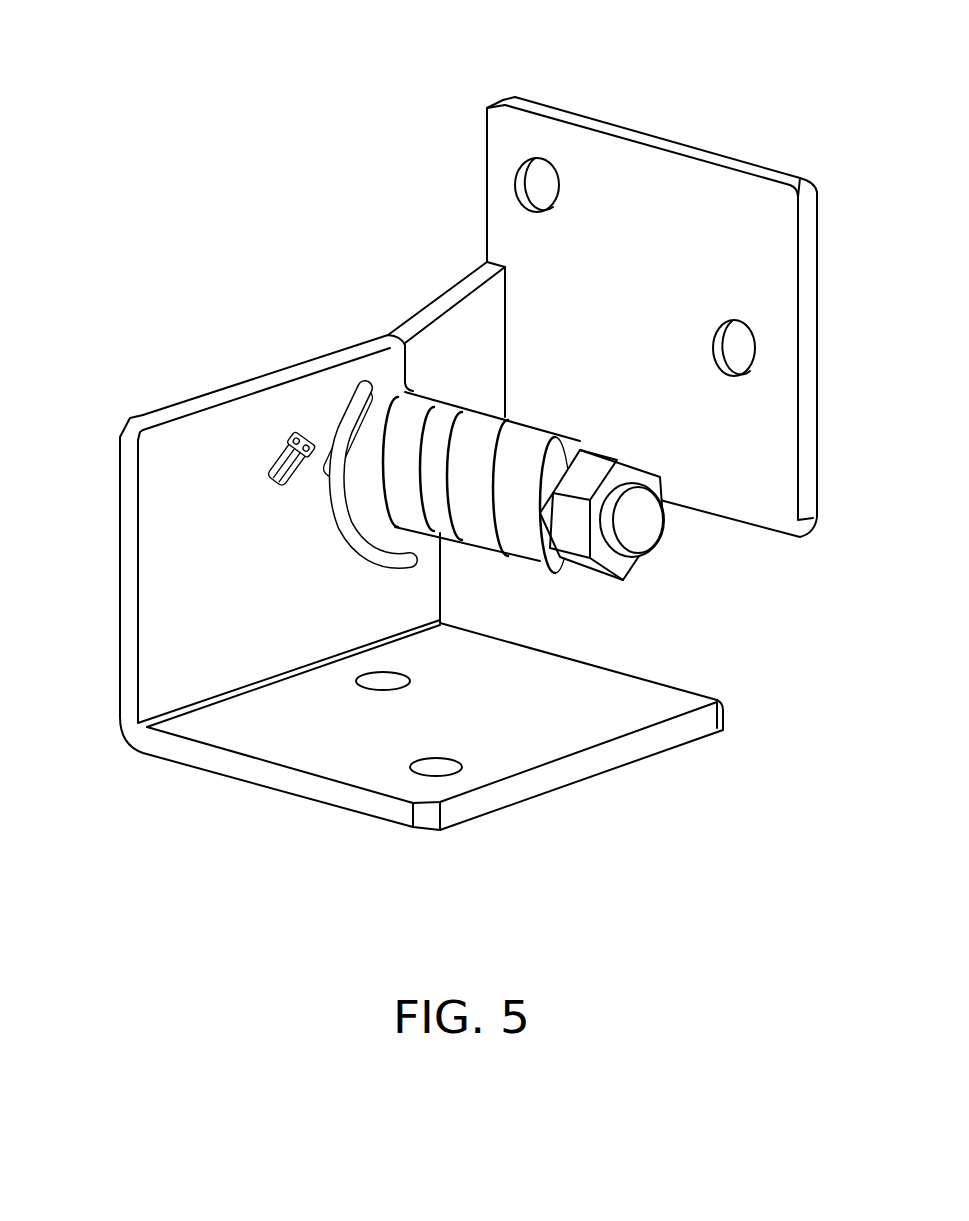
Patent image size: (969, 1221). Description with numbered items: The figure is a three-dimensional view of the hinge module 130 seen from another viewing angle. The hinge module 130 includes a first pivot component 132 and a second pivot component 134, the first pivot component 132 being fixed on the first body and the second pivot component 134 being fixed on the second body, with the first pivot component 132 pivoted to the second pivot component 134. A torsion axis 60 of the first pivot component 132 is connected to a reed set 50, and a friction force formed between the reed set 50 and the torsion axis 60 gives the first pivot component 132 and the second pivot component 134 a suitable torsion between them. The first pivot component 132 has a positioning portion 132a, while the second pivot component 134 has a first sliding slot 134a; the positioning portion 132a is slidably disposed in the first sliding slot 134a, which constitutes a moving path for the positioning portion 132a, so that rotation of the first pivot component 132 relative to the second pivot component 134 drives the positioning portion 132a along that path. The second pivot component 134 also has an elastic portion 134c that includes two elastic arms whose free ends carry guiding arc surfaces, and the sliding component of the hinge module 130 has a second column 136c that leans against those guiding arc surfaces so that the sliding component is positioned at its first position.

The hinge module 130 is at (198, 167).
The first pivot component 132 is at (785, 287).
The positioning portion 132a is at (343, 477).
The second pivot component 134 is at (563, 773).
The first sliding slot 134a is at (347, 450).
The elastic portion 134c is at (267, 485).
The second column 136c is at (300, 437).
The reed set 50 is at (537, 553).
The torsion axis 60 is at (640, 537).